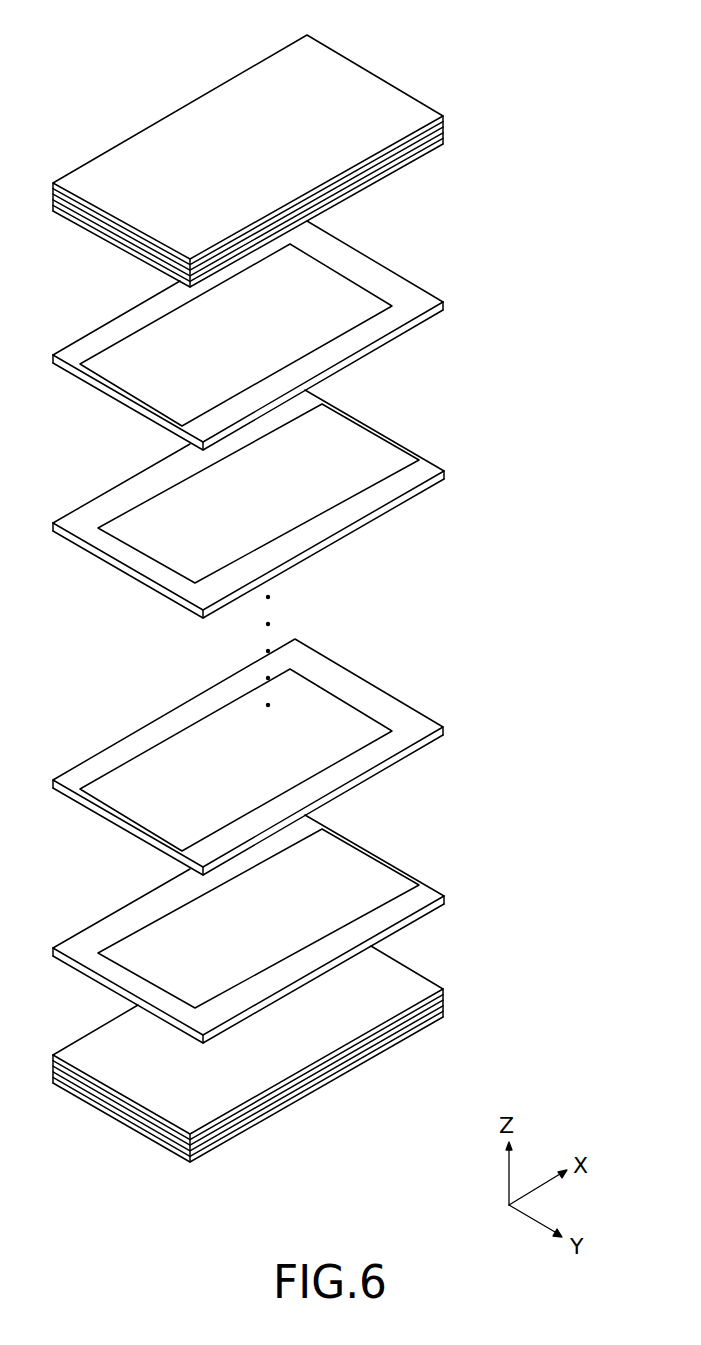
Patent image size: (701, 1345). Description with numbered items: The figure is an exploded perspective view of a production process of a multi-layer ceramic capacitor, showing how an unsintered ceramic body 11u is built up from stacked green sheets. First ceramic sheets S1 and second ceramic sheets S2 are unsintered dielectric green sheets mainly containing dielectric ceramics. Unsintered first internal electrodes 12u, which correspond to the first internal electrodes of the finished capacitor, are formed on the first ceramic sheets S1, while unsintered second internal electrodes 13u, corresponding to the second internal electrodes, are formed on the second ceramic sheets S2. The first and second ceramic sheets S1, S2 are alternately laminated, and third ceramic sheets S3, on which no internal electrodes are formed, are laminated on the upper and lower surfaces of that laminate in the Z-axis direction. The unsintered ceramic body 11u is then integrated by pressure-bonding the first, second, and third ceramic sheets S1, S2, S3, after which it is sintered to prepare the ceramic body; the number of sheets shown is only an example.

The unsintered ceramic body 11u is at (286, 595).
The unsintered first internal electrodes 12u is at (372, 282).
The unsintered second internal electrodes 13u is at (363, 452).
The first ceramic sheets S1 is at (286, 548).
The second ceramic sheets S2 is at (286, 716).
The third ceramic sheets S3 is at (453, 111).